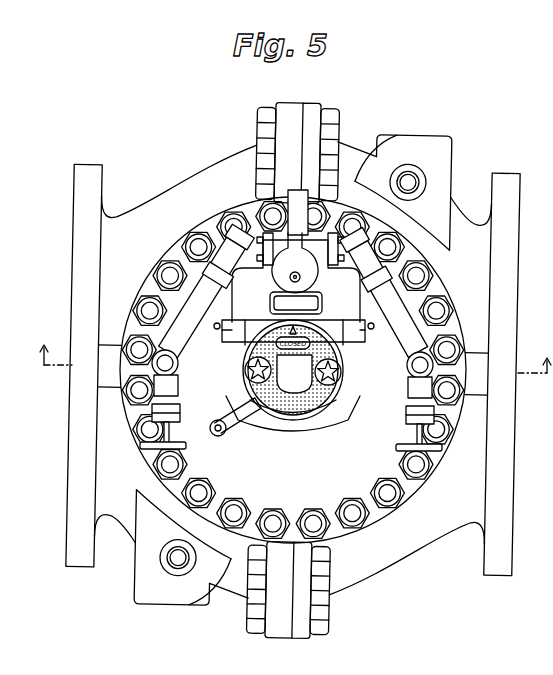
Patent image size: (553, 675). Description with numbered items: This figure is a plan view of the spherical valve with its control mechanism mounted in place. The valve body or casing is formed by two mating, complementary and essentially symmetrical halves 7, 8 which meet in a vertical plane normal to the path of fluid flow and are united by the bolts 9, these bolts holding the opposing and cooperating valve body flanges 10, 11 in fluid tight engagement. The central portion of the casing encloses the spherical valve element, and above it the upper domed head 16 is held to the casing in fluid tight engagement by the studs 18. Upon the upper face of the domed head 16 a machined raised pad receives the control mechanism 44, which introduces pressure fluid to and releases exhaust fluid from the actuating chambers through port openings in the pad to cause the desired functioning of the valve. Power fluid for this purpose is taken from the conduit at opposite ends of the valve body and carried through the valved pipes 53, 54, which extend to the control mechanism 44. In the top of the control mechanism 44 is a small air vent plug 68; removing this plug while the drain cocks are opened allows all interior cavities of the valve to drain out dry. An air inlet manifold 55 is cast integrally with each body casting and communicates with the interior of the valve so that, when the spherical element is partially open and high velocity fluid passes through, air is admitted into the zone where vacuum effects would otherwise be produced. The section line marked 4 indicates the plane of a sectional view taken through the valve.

The section line 4- 4 is at (289, 373).
The valve body half 7 is at (170, 181).
The valve body half 8 is at (405, 568).
The bolts 9 is at (258, 145).
The valve body flange 10 is at (281, 103).
The valve body flange 11 is at (315, 103).
The upper domed head 16 is at (400, 476).
The studs 18 is at (384, 503).
The control mechanism 44 is at (358, 345).
The valved pipe 53 is at (184, 355).
The valved pipe 54 is at (404, 376).
The air inlet manifold 55 is at (450, 155).
The air vent plug 68 is at (289, 276).